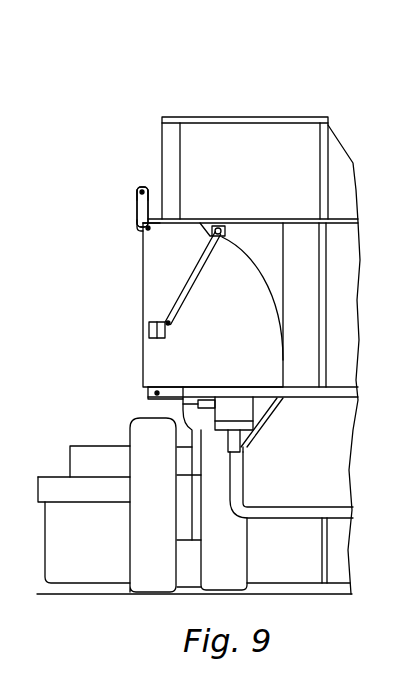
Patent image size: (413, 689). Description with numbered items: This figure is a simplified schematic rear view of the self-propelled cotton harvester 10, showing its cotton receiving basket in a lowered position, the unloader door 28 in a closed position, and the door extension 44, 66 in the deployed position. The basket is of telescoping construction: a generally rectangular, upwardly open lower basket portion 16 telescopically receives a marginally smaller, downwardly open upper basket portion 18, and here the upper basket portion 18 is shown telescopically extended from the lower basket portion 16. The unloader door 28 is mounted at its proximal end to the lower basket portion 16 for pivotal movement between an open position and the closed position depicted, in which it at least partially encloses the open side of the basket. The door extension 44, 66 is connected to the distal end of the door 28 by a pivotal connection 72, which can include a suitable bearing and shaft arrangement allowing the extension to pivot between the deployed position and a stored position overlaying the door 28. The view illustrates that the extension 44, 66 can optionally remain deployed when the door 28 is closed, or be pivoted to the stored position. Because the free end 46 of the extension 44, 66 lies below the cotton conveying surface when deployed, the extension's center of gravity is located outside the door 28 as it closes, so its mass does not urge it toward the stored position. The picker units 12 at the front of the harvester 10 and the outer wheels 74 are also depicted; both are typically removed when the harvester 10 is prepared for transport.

The cotton harvester 10 is at (324, 64).
The picker units 12 is at (85, 445).
The lower basket portion 16 is at (143, 350).
The upper basket portion 18 is at (197, 117).
The unloader door 28 is at (142, 302).
The door extension 44 is at (142, 180).
The door extension 66 is at (142, 207).
The free end 46 is at (137, 190).
The pivotal connection 72 is at (148, 228).
The outer wheels 74 is at (130, 550).